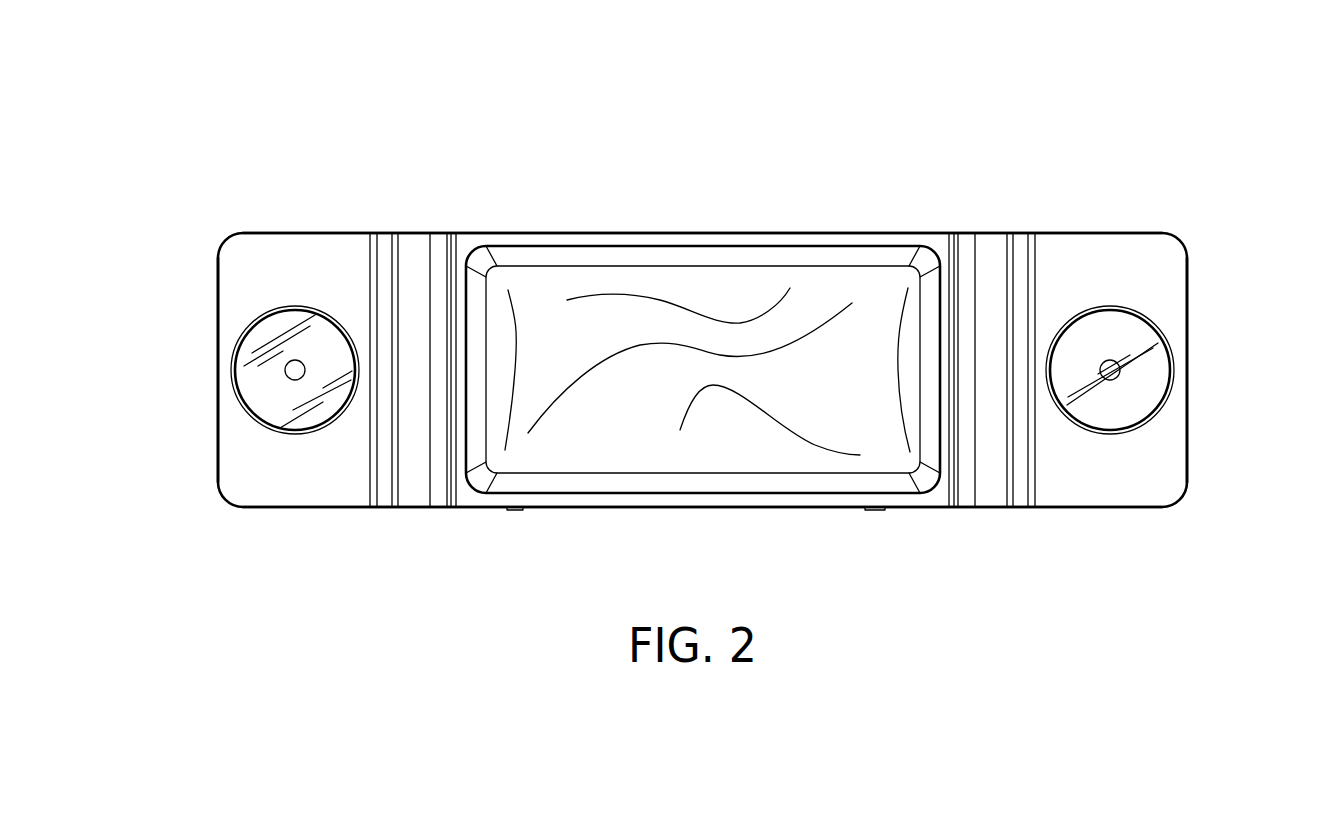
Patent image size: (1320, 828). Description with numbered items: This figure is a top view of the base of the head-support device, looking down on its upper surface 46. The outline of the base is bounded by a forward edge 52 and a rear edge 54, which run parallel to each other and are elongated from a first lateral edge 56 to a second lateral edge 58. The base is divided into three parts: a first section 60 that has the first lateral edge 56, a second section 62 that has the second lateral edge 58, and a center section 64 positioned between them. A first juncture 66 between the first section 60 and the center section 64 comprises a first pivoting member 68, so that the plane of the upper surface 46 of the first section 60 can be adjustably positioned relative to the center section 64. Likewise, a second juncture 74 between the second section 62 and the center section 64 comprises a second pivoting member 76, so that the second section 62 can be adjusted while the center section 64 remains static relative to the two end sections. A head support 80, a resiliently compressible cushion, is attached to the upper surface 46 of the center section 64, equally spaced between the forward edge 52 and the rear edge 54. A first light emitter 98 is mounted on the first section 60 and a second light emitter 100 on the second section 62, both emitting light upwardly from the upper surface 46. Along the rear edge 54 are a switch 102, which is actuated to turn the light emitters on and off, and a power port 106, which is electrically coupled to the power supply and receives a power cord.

The upper surface 46 is at (312, 488).
The forward edge 52 is at (840, 233).
The rear edge 54 is at (637, 507).
The first lateral edge 56 is at (1187, 287).
The second lateral edge 58 is at (218, 295).
The first section 60 is at (1178, 255).
The second section 62 is at (243, 256).
The center section 64 is at (703, 289).
The first juncture 66 is at (979, 341).
The first pivoting member 68 is at (1012, 470).
The second juncture 74 is at (413, 344).
The second pivoting member 76 is at (388, 482).
The head support 80 is at (737, 268).
The first light emitter 98 is at (1142, 375).
The second light emitter 100 is at (258, 370).
The switch 102 is at (872, 509).
The power port 106 is at (527, 509).